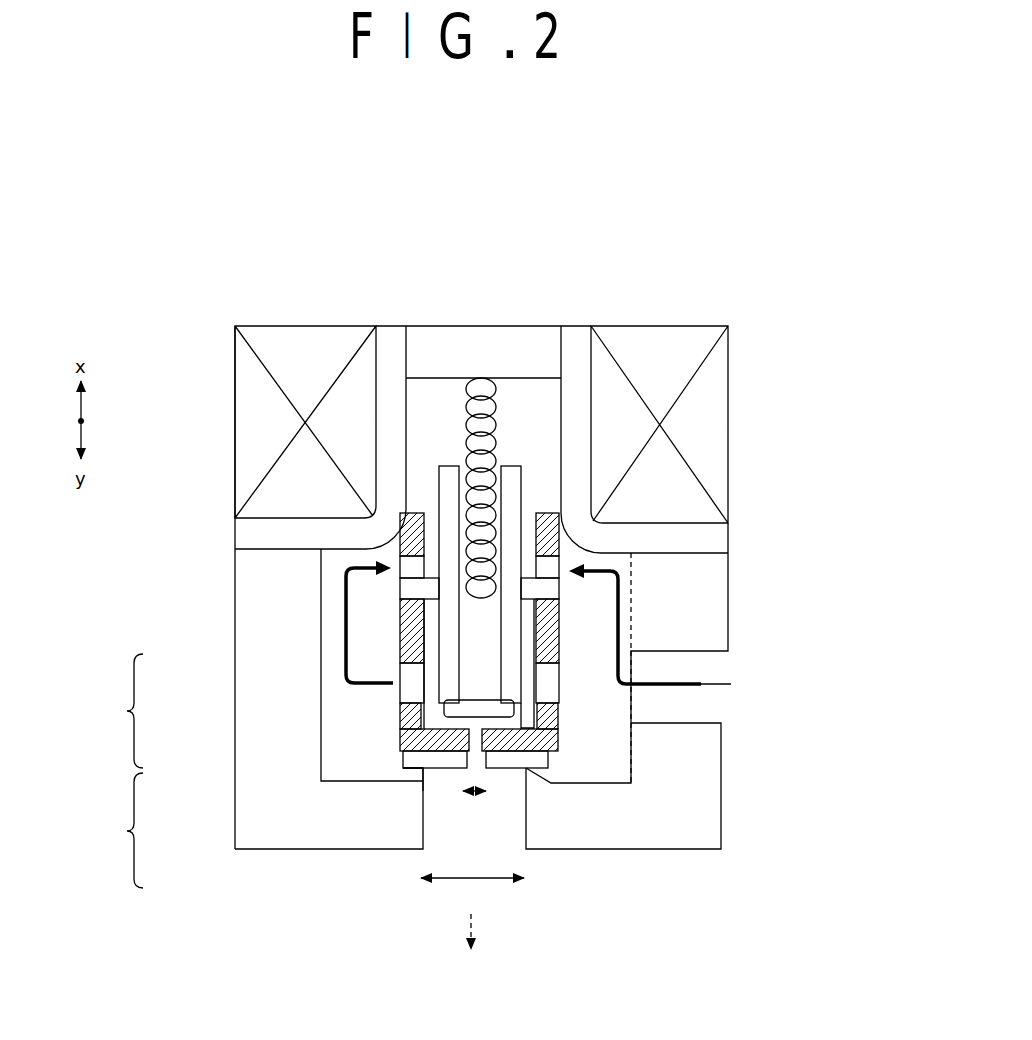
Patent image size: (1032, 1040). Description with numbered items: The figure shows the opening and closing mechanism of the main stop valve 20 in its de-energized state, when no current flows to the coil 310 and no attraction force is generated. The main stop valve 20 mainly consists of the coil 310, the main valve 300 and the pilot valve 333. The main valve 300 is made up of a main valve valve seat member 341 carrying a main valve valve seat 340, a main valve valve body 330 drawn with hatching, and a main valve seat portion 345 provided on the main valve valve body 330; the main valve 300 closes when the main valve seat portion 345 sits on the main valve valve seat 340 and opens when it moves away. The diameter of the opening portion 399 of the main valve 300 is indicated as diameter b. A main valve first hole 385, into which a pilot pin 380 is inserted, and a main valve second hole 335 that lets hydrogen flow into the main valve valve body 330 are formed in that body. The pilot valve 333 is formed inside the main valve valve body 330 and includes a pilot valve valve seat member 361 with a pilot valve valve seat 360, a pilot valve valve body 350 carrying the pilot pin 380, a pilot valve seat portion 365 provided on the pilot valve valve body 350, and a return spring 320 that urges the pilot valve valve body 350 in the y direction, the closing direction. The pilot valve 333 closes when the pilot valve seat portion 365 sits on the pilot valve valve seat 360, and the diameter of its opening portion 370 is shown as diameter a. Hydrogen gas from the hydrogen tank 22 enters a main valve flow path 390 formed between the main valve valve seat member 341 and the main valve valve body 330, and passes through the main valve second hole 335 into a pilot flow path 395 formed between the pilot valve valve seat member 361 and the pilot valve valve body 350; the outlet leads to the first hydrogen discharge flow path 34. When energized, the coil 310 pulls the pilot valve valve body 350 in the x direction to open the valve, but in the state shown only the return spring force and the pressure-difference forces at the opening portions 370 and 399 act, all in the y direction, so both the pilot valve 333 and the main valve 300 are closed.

The main stop valve 20 is at (692, 272).
The hydrogen tank 22 is at (723, 638).
The first hydrogen discharge flow path 34 is at (475, 949).
The main valve 300 is at (108, 830).
The coil 310 is at (236, 370).
The return spring 320 is at (493, 410).
The main valve valve body 330 is at (400, 755).
The pilot valve 333 is at (108, 711).
The main valve second hole 335 is at (547, 690).
The main valve valve seat 340 is at (422, 782).
The main valve valve seat member 341 is at (257, 846).
The main valve seat portion 345 is at (425, 768).
The pilot valve valve body 350 is at (440, 660).
The pilot valve valve seat 360 is at (400, 708).
The pilot valve valve seat member 361 is at (400, 732).
The pilot valve seat portion 365 is at (448, 697).
The opening portion of the pilot valve 370 is at (468, 752).
The pilot pin 380 is at (405, 586).
The main valve first hole 385 is at (393, 557).
The main valve flow path 390 is at (400, 606).
The pilot flow path 395 is at (400, 626).
The opening portion of the main valve 399 is at (524, 853).